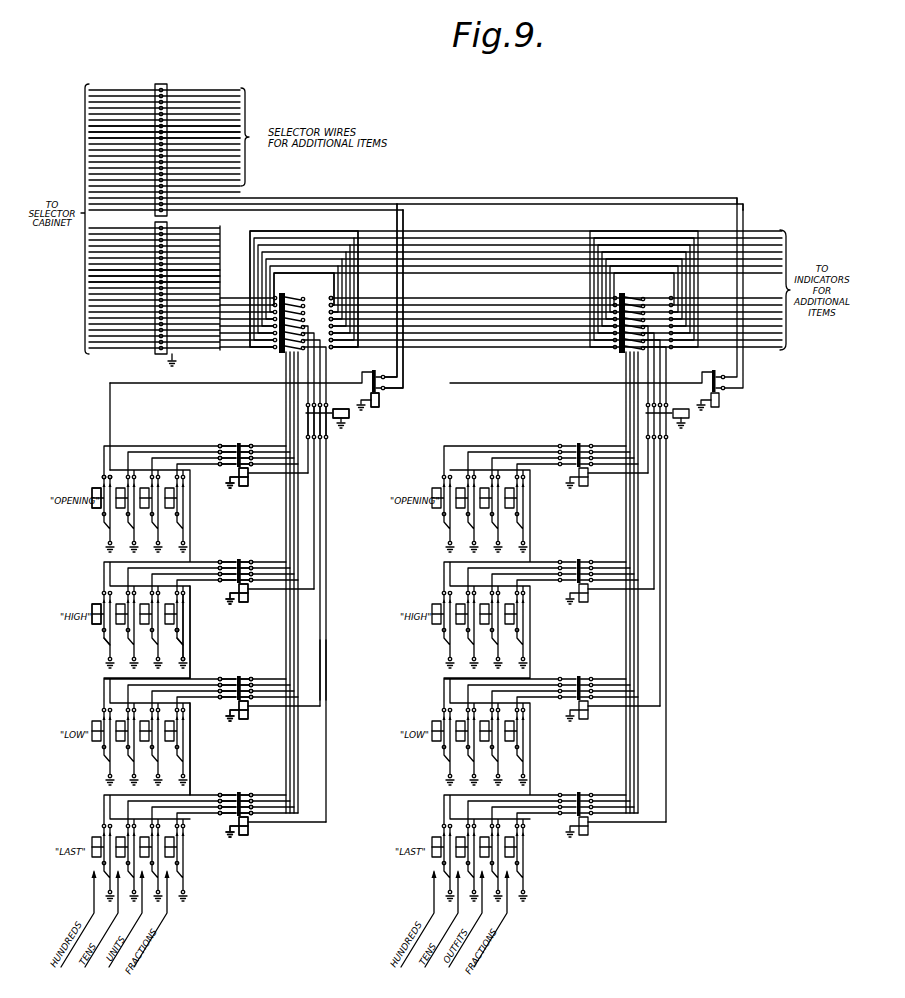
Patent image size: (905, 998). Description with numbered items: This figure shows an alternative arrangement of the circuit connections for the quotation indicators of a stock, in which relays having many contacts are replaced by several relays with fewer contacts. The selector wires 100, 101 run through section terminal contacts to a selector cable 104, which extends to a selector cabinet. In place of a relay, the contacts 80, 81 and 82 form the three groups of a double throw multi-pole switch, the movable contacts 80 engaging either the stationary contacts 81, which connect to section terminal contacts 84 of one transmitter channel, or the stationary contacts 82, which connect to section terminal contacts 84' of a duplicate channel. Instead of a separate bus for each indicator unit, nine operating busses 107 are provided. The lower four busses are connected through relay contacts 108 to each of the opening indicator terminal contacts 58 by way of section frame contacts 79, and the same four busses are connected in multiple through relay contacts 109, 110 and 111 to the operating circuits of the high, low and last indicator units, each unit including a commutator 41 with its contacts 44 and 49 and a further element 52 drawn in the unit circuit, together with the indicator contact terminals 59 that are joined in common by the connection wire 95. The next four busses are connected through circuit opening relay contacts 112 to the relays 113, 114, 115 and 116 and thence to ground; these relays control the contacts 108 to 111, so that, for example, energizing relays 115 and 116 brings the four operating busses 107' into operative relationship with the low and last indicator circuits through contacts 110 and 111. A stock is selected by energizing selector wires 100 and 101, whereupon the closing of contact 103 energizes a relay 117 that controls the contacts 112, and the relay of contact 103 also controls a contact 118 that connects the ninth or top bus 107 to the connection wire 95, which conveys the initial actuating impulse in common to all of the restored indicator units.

The selector cable 104 is at (125, 122).
The section terminal contacts 84' is at (154, 246).
The section terminal contacts 84 is at (137, 295).
The operating busses 107 is at (243, 334).
The contacts 80 is at (298, 297).
The stationary contacts 81 is at (282, 352).
The stationary contacts 82 is at (331, 350).
The contact 118 is at (376, 370).
The selector wire 100 is at (397, 368).
The selector wire 101 is at (404, 388).
The contact 103 is at (379, 398).
The relay 117 is at (350, 416).
The relay contacts 112 is at (329, 440).
The connection wire 95 is at (110, 414).
The section frame contacts 79 is at (104, 474).
The indicator terminal contacts 58 is at (100, 494).
The commutator 41 is at (102, 642).
The indicator contact terminals 59 is at (184, 614).
The contact 49 is at (180, 636).
The contact arm 52 is at (181, 648).
The contact 44 is at (185, 670).
The relay contacts 108 is at (232, 446).
The relay contacts 109 is at (232, 562).
The relay contacts 110 is at (232, 679).
The relay contacts 111 is at (232, 795).
The relay 113 is at (238, 488).
The relay 114 is at (246, 600).
The relay 115 is at (247, 718).
The relay 116 is at (247, 834).
The operating busses 107' is at (336, 656).